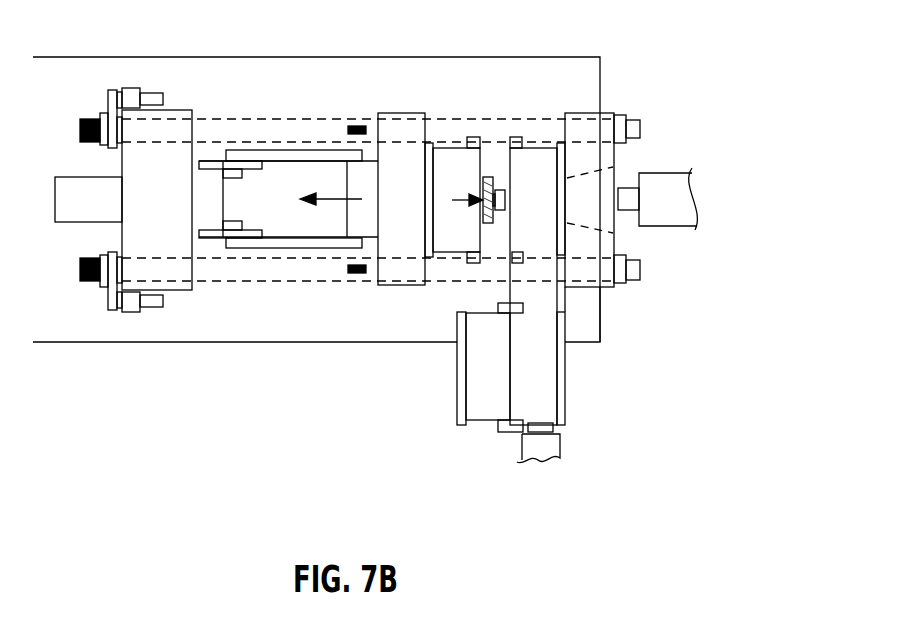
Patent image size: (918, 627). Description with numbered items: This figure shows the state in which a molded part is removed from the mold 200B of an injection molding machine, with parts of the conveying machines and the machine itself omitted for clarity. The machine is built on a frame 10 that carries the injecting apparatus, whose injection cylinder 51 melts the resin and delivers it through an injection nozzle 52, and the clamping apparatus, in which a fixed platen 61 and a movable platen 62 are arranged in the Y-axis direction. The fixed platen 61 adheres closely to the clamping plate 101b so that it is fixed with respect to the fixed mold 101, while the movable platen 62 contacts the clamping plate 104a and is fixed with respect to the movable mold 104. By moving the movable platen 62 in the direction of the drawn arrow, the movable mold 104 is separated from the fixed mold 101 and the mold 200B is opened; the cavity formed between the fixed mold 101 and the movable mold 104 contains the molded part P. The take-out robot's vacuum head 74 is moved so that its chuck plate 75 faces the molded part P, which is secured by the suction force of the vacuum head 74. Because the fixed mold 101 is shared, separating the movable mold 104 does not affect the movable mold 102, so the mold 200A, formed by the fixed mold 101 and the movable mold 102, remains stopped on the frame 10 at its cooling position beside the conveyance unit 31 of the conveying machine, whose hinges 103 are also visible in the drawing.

The frame 10 is at (148, 343).
The conveyance unit 31 is at (549, 446).
The injection cylinder 51 is at (693, 190).
The injection nozzle 52 is at (628, 198).
The fixed platen 61 is at (604, 112).
The movable platen 62 is at (400, 287).
The vacuum head 74 is at (499, 189).
The chuck plate 75 is at (502, 211).
The fixed mold 101 is at (541, 383).
The clamping plate 101b is at (568, 112).
The movable mold 102 is at (480, 380).
The hinge 103 is at (472, 137).
The movable mold 104 is at (437, 177).
The clamping plate 104a is at (427, 148).
The mold 200A is at (578, 370).
The mold 200B is at (576, 180).
The molded part P is at (488, 224).